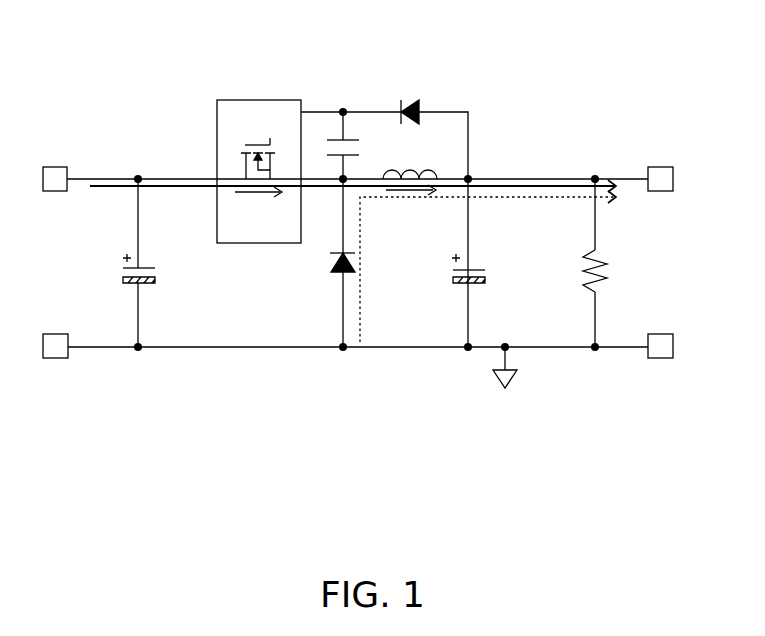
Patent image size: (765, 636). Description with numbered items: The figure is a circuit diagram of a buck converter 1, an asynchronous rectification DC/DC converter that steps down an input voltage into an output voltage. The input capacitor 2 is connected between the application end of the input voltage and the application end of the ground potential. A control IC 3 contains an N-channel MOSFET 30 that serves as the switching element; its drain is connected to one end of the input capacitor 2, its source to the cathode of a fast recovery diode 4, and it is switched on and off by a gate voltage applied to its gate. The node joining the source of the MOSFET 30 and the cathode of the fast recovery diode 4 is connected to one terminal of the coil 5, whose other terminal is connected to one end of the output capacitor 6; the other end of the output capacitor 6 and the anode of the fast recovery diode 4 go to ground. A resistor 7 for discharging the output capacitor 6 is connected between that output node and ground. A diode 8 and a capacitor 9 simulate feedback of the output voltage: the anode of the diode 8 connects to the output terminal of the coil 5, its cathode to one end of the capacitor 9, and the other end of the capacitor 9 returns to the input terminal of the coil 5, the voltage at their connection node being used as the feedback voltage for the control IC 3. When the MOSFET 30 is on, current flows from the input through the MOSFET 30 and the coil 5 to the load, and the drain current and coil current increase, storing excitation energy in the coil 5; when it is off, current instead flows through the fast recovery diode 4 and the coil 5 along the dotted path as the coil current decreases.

The buck converter 1 is at (511, 44).
The input capacitor 2 is at (157, 273).
The control integrated circuit 3 is at (298, 100).
The MOSFET 30 is at (262, 140).
The fast recovery diode 4 is at (356, 262).
The coil 5 is at (416, 168).
The output capacitor 6 is at (487, 263).
The resistor 7 is at (603, 264).
The diode 8 is at (405, 99).
The capacitor 9 is at (360, 148).